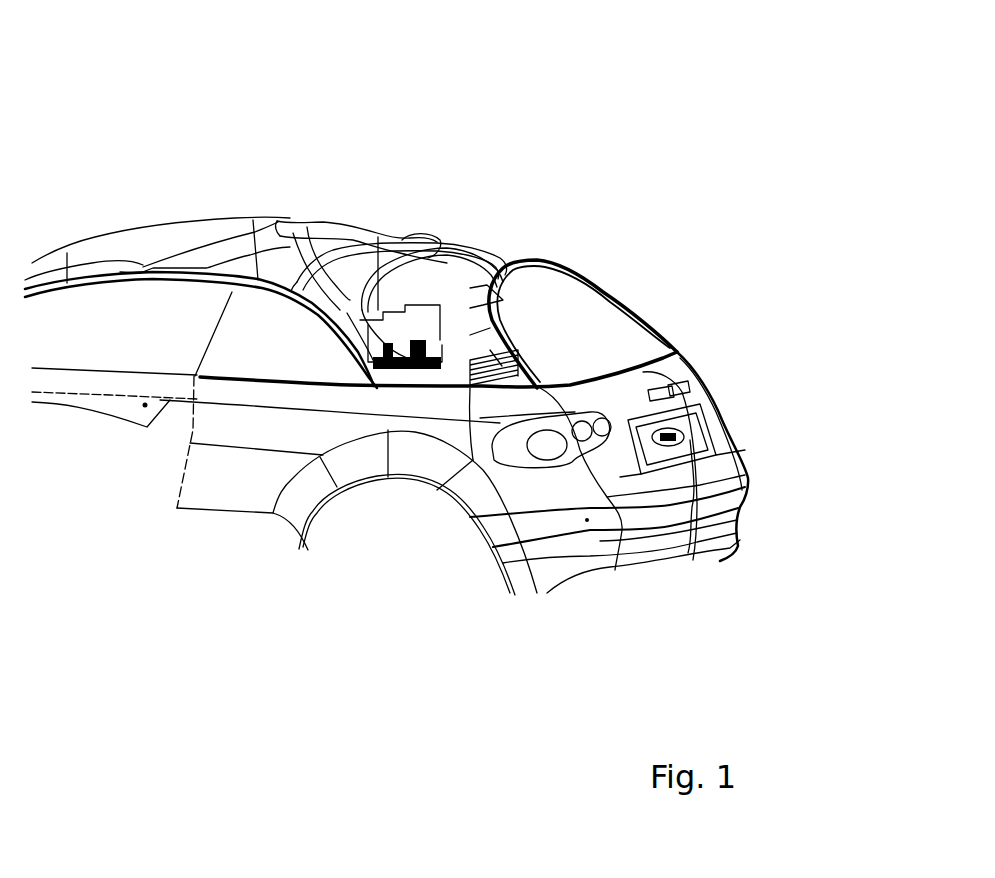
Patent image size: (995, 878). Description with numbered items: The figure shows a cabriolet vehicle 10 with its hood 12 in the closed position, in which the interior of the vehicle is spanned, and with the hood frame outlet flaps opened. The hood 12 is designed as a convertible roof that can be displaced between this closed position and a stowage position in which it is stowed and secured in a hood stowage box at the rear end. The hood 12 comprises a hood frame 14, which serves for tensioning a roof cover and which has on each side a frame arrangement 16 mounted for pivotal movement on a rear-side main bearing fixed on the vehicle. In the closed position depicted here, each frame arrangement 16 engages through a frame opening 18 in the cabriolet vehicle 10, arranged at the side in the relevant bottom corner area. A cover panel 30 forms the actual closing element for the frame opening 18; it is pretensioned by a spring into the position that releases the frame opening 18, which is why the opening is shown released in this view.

The cabriolet vehicle 10 is at (567, 108).
The hood 12 is at (370, 226).
The hood frame 14 is at (466, 238).
The frame arrangement 16 is at (362, 385).
The frame opening 18 is at (398, 378).
The cover panel 30 is at (433, 322).